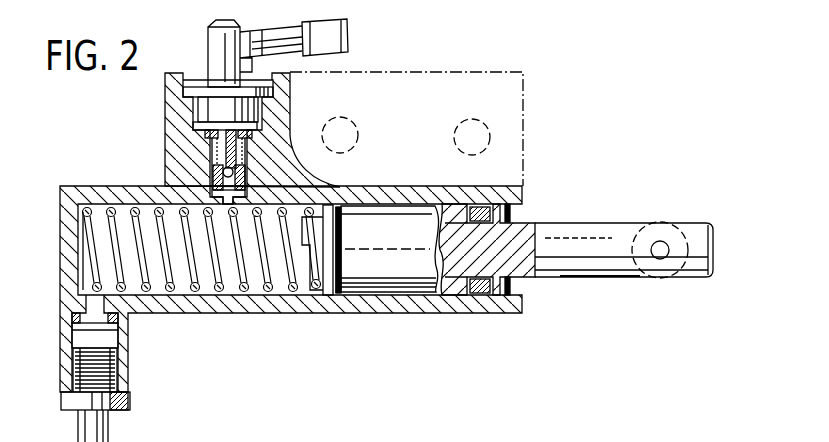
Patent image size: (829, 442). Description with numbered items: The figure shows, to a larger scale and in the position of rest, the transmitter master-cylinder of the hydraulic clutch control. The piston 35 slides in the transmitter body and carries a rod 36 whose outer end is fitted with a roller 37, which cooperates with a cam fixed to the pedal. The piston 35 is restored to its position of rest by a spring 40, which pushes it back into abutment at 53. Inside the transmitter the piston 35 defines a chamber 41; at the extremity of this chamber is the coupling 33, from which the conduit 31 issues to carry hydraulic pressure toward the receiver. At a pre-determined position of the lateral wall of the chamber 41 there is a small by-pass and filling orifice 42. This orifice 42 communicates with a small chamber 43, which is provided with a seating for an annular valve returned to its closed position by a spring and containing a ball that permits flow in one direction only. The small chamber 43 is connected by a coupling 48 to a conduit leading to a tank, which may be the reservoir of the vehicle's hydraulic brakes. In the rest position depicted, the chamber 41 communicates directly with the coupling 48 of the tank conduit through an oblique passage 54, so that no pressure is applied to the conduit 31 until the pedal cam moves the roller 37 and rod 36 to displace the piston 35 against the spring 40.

The conduit 31 is at (100, 432).
The coupling 33 is at (130, 358).
The piston 35 is at (329, 297).
The rod 36 is at (563, 238).
The roller 37 is at (662, 224).
The spring 40 is at (218, 295).
The chamber 41 is at (255, 290).
The by-pass and filling orifice 42 is at (213, 200).
The small chamber 43 is at (217, 153).
The coupling 48 is at (343, 50).
The abutment 53 is at (508, 205).
The oblique passage 54 is at (285, 182).